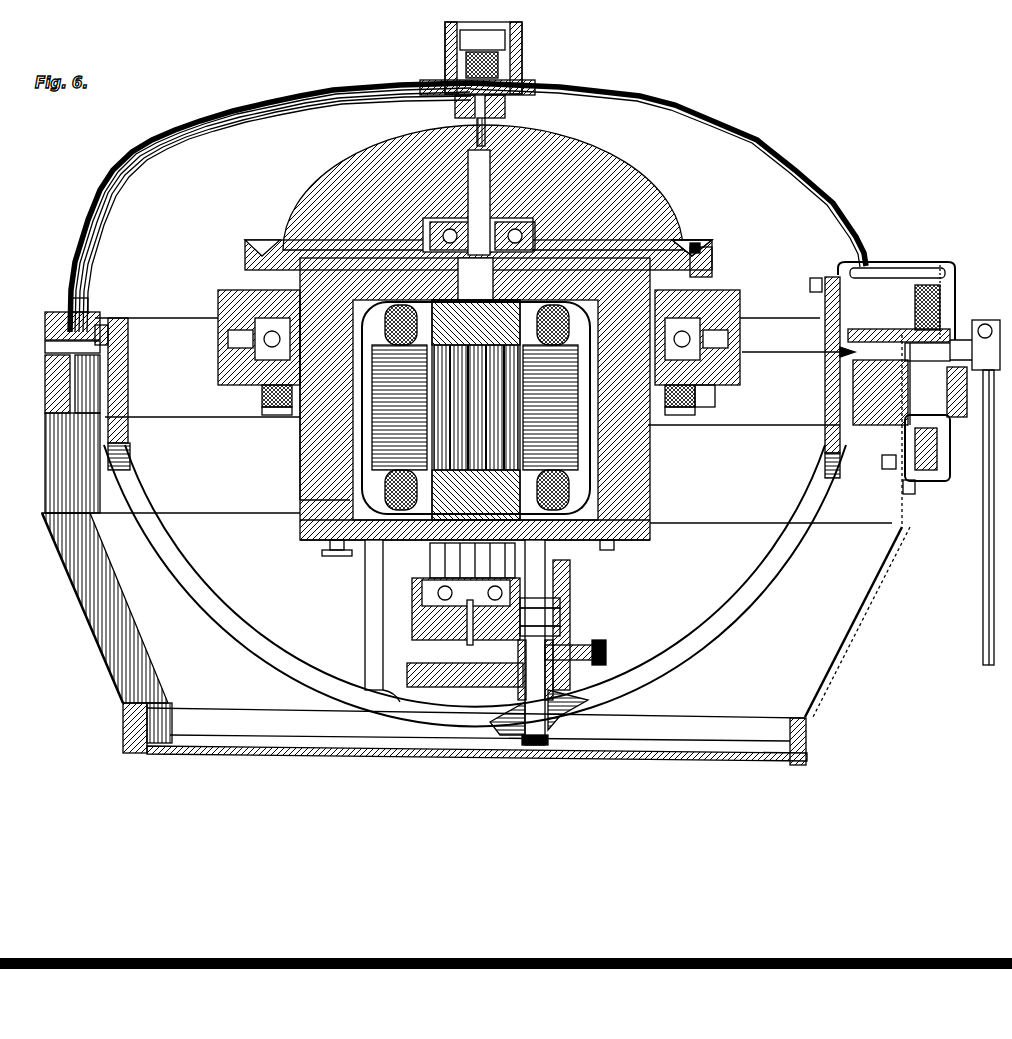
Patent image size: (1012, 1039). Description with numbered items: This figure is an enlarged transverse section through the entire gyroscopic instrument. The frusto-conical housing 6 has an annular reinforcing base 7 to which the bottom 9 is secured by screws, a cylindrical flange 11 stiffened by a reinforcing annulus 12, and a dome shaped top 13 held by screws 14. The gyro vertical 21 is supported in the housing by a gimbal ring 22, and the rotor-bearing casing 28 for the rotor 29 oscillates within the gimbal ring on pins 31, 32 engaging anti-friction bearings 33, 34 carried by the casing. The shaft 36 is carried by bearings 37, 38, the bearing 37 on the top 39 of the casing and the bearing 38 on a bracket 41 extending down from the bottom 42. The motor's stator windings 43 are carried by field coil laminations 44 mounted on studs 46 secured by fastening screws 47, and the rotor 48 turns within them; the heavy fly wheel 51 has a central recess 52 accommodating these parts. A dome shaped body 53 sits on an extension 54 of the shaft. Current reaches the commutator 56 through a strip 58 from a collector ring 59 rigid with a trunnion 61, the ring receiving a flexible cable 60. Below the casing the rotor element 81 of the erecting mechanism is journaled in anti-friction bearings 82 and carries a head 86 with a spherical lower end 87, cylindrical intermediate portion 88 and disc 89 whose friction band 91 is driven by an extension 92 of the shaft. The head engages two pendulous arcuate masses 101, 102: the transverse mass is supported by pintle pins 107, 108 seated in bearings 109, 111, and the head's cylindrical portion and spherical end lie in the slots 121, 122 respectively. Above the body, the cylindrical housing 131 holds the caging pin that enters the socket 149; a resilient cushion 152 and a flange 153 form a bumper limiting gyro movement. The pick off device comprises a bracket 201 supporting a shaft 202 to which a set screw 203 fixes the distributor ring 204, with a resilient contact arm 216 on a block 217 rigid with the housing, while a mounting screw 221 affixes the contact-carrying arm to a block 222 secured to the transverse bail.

The housing 6 is at (105, 680).
The annular reinforcing base 7 is at (125, 742).
The bottom 9 is at (290, 757).
The cylindrical flange 11 is at (78, 600).
The reinforcing annulus 12 is at (55, 373).
The dome shaped top 13 is at (754, 132).
The screws 14 is at (72, 300).
The gyro vertical 21 is at (298, 468).
The gimbal ring 22 is at (162, 417).
The rotor-bearing casing 28 is at (600, 472).
The rotor 29 is at (684, 245).
The pin 31 is at (230, 345).
The pin 32 is at (728, 325).
The anti-friction bearing 33 is at (258, 300).
The anti-friction bearing 34 is at (700, 300).
The shaft 36 is at (485, 288).
The bearing 37 is at (612, 235).
The bearing 38 is at (412, 622).
The top of the rotor-bearing casing 39 is at (692, 243).
The bracket 41 is at (412, 600).
The bottom of the rotor-bearing casing 42 is at (320, 540).
The stator windings 43 is at (340, 495).
The field coil laminations 44 is at (320, 450).
The studs 46 is at (337, 550).
The fastening screws 47 is at (325, 555).
The rotor windings 48 is at (565, 322).
The fly wheel 51 is at (640, 450).
The central recess 52 is at (600, 497).
The dome shaped body 53 is at (580, 165).
The extension 54 is at (492, 195).
The commutator 56 is at (480, 571).
The strip 58 is at (652, 538).
The collector ring 59 is at (700, 408).
The flexible cable 60 is at (275, 412).
The trunnion 61 is at (268, 392).
The rotor element 81 is at (565, 612).
The anti-friction bearings 82 is at (560, 600).
The head 86 is at (548, 745).
The spherical lower end 87 is at (522, 742).
The cylindrical intermediate portion 88 is at (570, 670).
The disc 89 is at (598, 653).
The friction band 91 is at (606, 645).
The extension 92 is at (467, 636).
The arcuate mass 101 is at (365, 654).
The arcuate mass 102 is at (737, 627).
The pintle pin 107 is at (130, 330).
The pintle pin 108 is at (840, 355).
The bearing 109 is at (110, 337).
The bearing 111 is at (848, 336).
The slot 121 is at (380, 702).
The slot 122 is at (782, 563).
The cylindrical housing 131 is at (445, 44).
The socket 149 is at (492, 160).
The resilient cushion 152 is at (455, 105).
The flange 153 is at (710, 250).
The bracket 201 is at (985, 320).
The shaft 202 is at (927, 352).
The set screw 203 is at (880, 425).
The distributor ring 204 is at (948, 445).
The resilient contact arm 216 is at (884, 462).
The block 217 is at (912, 494).
The mounting screw 221 is at (818, 280).
The block 222 is at (822, 315).